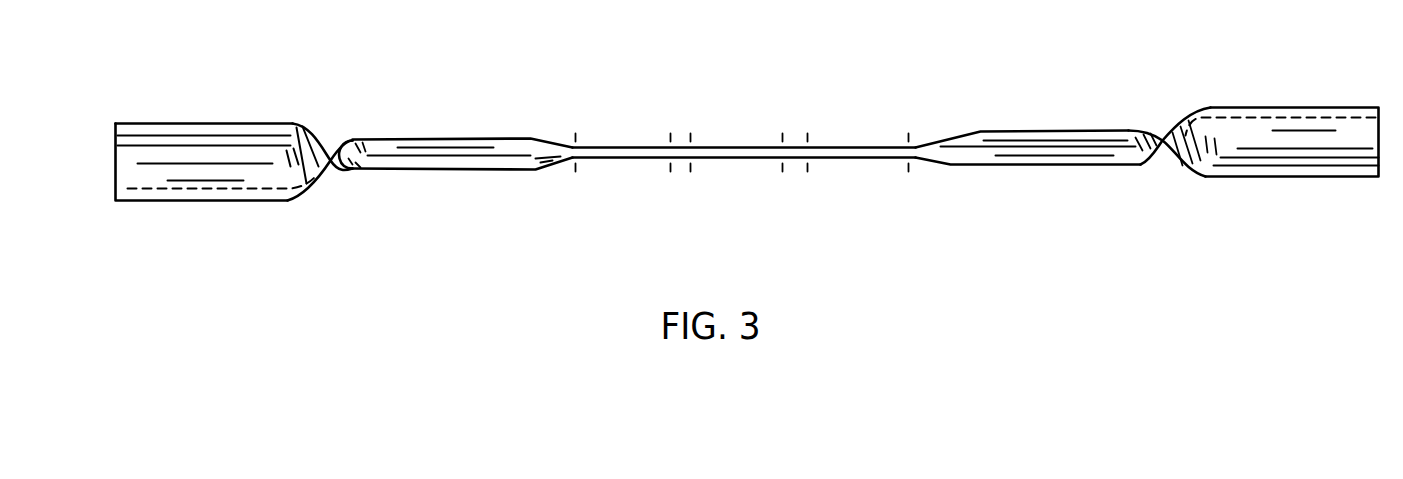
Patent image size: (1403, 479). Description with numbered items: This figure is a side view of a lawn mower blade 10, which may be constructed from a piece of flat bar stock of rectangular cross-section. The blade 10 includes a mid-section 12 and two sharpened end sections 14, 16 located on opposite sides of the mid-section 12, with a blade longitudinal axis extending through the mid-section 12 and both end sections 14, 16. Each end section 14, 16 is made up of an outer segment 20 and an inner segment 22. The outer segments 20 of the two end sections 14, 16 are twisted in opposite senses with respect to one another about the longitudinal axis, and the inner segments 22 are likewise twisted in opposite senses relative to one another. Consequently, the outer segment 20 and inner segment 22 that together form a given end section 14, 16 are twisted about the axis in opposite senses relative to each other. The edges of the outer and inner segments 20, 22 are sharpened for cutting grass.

The lawn mower blade 10 is at (278, 88).
The mid-section 12 is at (680, 146).
The end section 14 is at (358, 134).
The end section 16 is at (1133, 129).
The outer segment 20 is at (180, 145).
The inner segment 22 is at (440, 148).